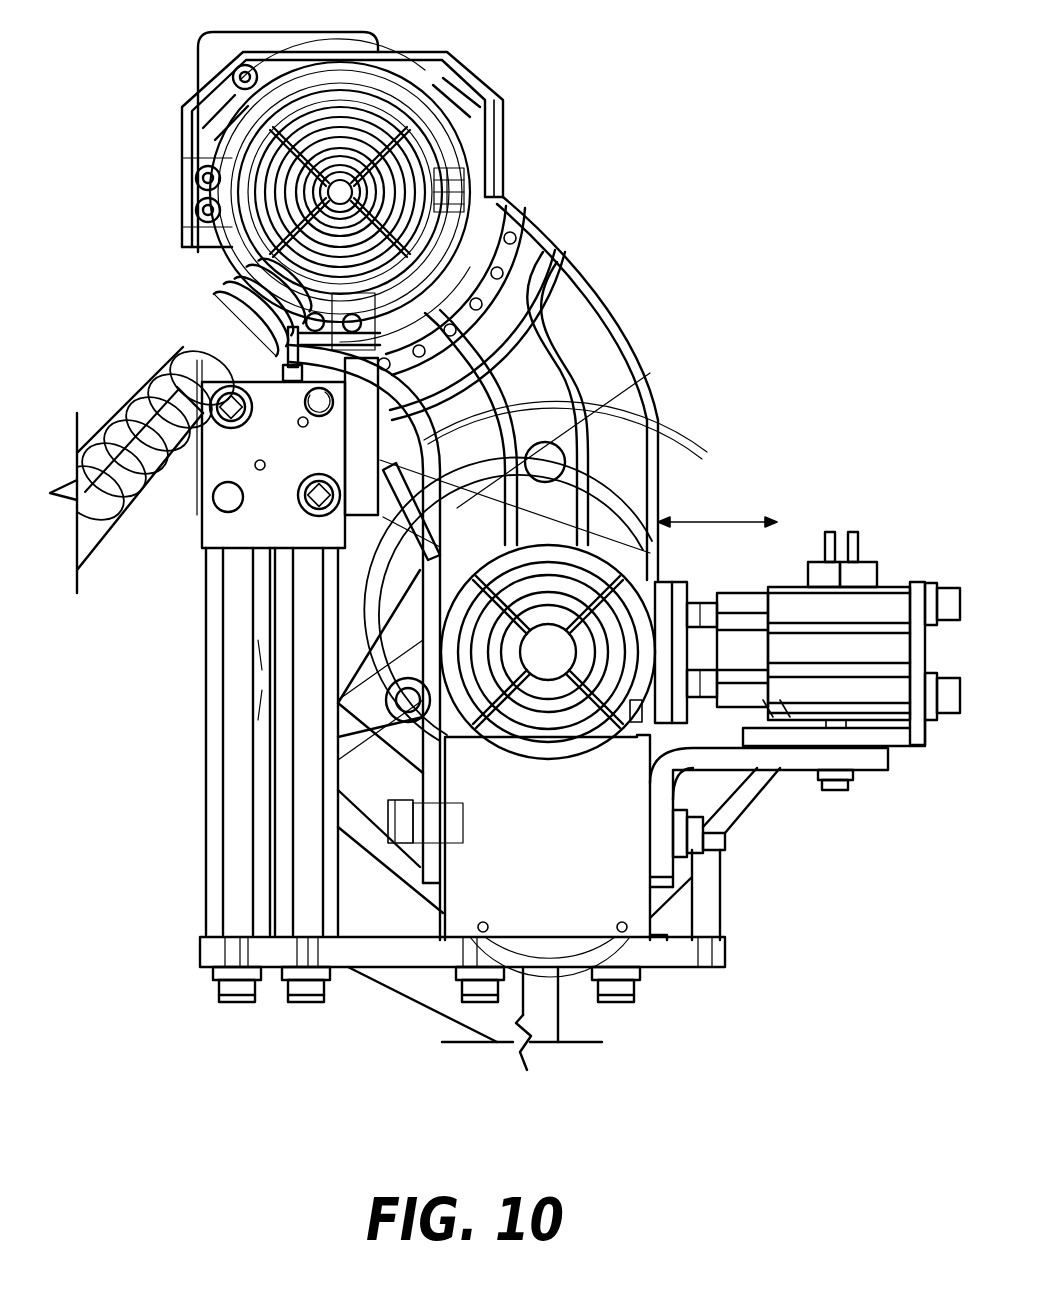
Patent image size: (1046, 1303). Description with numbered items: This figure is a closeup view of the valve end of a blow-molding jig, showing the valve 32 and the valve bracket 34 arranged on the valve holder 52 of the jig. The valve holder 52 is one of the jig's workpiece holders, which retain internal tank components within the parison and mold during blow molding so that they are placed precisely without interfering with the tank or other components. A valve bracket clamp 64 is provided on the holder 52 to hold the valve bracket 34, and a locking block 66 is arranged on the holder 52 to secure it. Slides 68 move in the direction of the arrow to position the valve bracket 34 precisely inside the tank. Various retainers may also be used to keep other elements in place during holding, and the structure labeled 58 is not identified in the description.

The valve 32 is at (428, 184).
The valve bracket 34 is at (578, 268).
The valve holder 52 is at (137, 730).
The base plate 58 is at (527, 862).
The valve bracket clamp 64 is at (668, 595).
The locking block 66 is at (587, 873).
The slides 68 is at (733, 593).